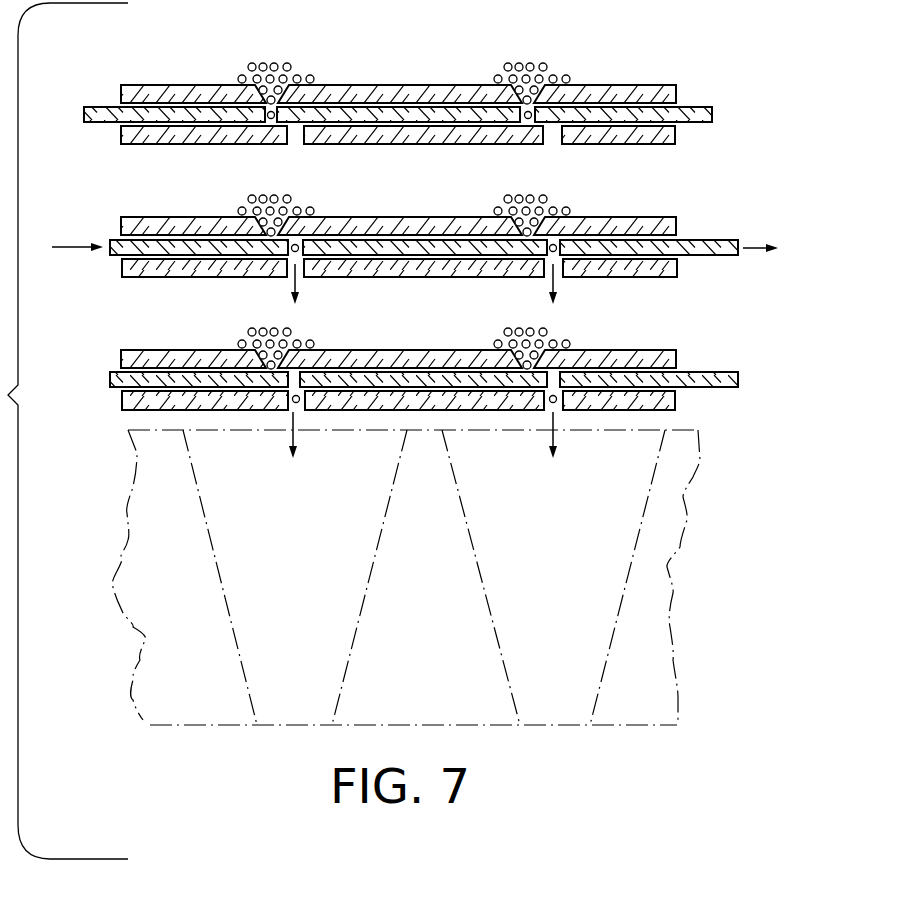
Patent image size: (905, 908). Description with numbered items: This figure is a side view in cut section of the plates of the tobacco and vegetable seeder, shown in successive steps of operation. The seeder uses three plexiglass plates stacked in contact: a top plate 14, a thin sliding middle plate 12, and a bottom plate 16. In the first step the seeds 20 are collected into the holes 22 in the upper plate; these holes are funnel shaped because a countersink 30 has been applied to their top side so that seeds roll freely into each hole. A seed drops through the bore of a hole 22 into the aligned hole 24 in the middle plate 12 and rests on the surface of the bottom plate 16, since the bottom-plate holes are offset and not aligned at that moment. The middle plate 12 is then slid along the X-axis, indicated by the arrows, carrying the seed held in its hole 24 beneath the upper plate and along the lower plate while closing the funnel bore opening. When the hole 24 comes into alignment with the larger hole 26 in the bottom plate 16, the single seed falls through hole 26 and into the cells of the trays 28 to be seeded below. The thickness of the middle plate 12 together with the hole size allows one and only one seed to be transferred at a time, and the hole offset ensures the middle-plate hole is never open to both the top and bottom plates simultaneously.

The middle plate 12 is at (428, 214).
The top plate 14 is at (428, 66).
The bottom plate 16 is at (697, 372).
The seeds 20 is at (508, 68).
The holes 22 is at (571, 240).
The hole 24 is at (567, 243).
The hole 26 is at (570, 400).
The trays 28 is at (692, 512).
The countersink 30 is at (576, 97).